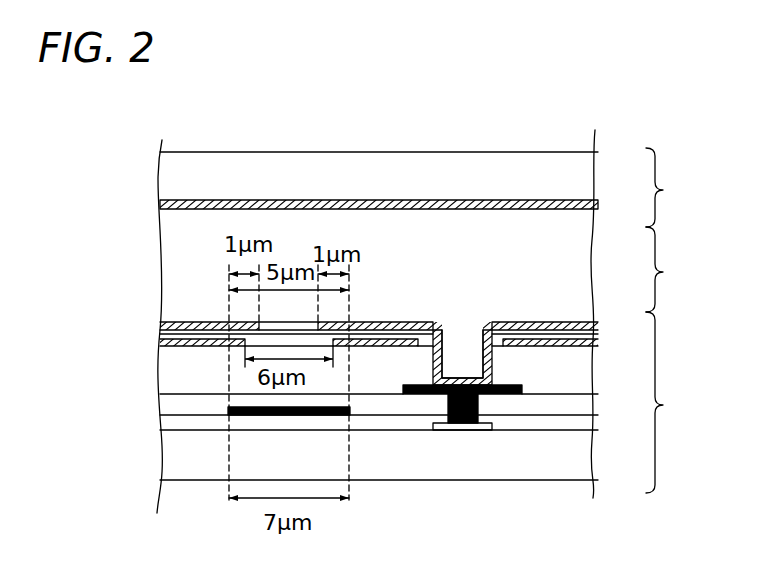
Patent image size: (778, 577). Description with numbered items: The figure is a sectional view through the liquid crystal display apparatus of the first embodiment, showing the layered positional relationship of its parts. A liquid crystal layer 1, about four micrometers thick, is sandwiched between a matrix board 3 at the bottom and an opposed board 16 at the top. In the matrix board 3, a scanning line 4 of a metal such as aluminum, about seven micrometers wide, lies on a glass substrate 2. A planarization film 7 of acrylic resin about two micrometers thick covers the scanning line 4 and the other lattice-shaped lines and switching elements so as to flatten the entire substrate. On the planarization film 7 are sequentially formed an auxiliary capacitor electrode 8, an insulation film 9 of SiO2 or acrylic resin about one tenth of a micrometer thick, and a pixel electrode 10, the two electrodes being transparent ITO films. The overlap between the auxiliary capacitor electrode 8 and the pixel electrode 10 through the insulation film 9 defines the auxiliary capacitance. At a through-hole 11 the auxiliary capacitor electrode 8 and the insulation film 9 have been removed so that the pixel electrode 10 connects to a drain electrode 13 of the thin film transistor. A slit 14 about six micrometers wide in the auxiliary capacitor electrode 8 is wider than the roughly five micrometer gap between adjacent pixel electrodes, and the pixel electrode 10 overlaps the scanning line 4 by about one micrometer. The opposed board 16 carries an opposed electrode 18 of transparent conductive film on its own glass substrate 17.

The liquid crystal layer 1 is at (665, 269).
The glass substrate 2 is at (167, 457).
The matrix board 3 is at (668, 402).
The scanning line 4 is at (230, 415).
The planarization film 7 is at (172, 367).
The auxiliary capacitor electrode 8 is at (165, 344).
The insulation film 9 is at (164, 334).
The pixel electrode 10 is at (168, 320).
The through-hole 11 is at (462, 358).
The drain electrode 13 is at (463, 424).
The slit 14 is at (272, 341).
The opposed board 16 is at (668, 187).
The glass substrate 17 is at (173, 180).
The opposed electrode 18 is at (162, 202).